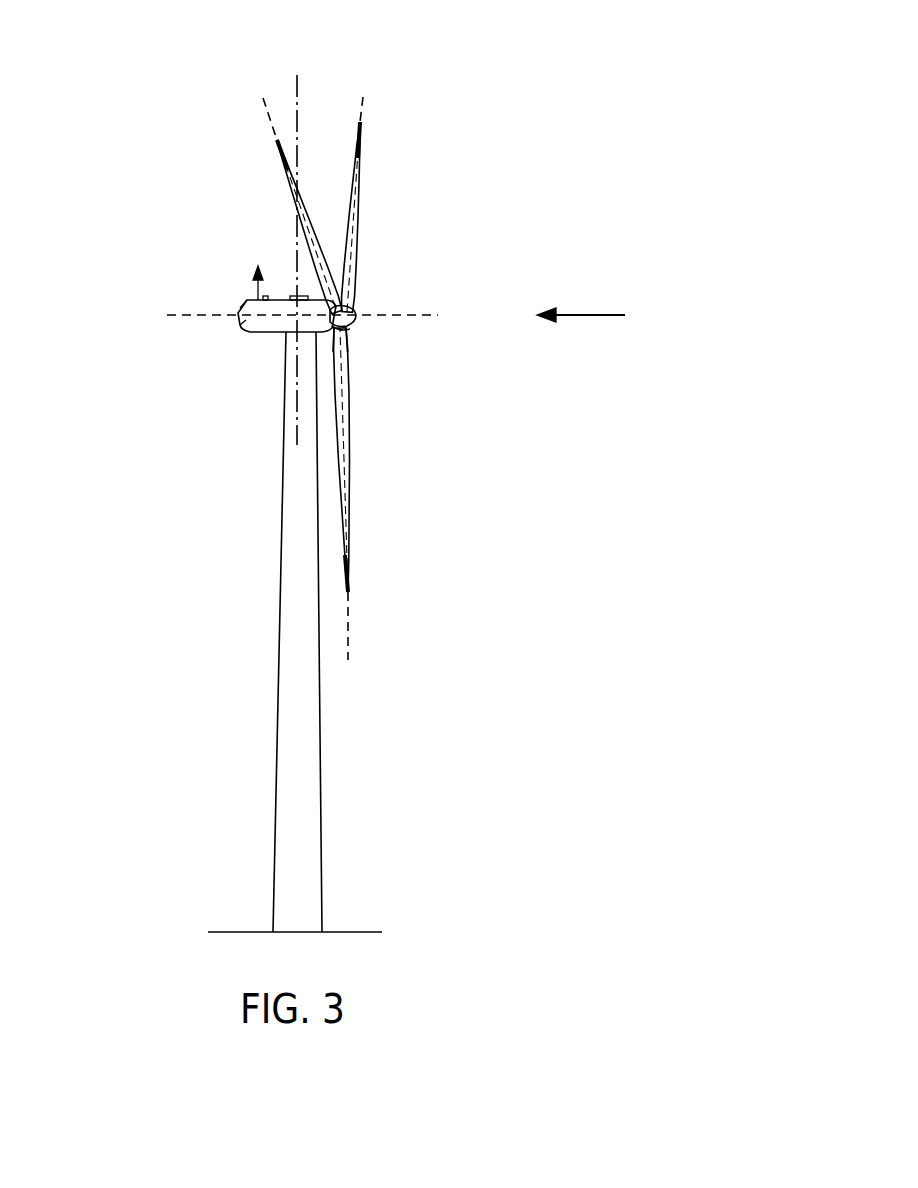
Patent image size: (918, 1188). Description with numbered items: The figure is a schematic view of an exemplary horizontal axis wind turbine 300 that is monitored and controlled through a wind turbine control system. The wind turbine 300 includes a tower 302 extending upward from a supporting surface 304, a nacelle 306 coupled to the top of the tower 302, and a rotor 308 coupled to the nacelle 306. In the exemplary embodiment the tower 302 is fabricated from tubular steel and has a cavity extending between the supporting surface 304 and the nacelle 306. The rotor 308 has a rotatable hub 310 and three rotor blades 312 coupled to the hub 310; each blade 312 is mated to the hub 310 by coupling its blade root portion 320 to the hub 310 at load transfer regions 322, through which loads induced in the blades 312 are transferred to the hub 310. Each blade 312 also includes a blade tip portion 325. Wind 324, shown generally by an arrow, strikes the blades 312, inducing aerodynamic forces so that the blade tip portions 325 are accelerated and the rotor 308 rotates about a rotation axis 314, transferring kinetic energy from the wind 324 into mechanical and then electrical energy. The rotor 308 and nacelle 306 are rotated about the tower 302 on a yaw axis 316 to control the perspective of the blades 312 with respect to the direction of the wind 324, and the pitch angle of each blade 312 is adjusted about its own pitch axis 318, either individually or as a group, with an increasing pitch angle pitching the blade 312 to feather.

The wind turbine 300 is at (140, 158).
The tower 302 is at (276, 757).
The supporting surface 304 is at (247, 931).
The nacelle 306 is at (258, 334).
The rotor 308 is at (373, 222).
The rotatable hub 310 is at (351, 309).
The rotor blade 312 is at (297, 203).
The rotation axis 314 is at (422, 318).
The yaw axis 316 is at (298, 88).
The pitch axis 318 is at (263, 104).
The blade root portion 320 is at (347, 400).
The load transfer region 322 is at (347, 327).
The wind 324 is at (588, 314).
The blade tip portion 325 is at (282, 165).